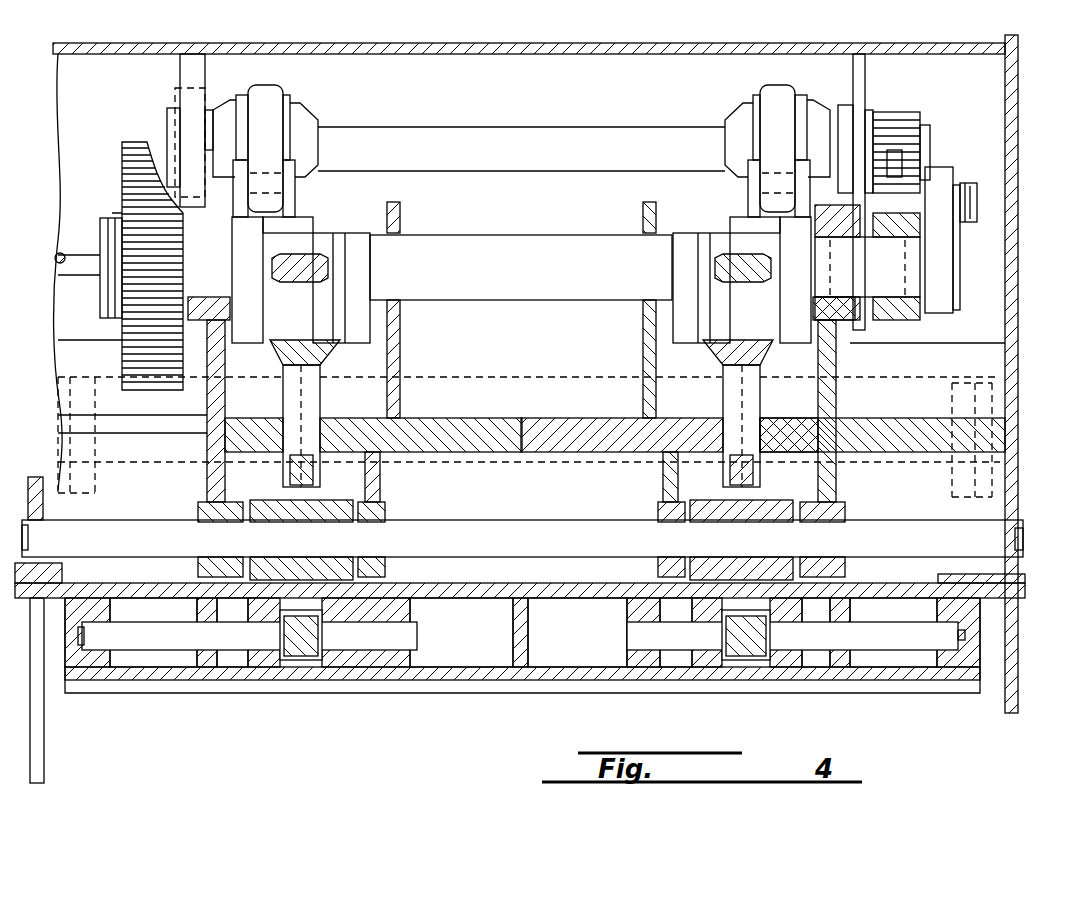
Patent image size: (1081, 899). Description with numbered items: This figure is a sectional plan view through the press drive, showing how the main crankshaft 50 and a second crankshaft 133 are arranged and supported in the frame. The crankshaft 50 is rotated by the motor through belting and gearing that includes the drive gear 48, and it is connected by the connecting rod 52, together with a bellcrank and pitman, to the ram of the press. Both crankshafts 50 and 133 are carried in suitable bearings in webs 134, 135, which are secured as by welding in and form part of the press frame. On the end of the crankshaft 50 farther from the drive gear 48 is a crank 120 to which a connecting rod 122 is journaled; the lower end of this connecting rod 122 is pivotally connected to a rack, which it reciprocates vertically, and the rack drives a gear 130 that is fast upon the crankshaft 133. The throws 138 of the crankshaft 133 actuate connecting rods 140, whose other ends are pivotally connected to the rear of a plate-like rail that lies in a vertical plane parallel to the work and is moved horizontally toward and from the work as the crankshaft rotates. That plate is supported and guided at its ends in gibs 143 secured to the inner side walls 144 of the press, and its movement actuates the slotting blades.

The drive gear 48 is at (138, 172).
The crankshaft 50 is at (520, 268).
The connecting rod 52 is at (305, 398).
The crank 120 is at (988, 285).
The connecting rod 122 is at (947, 247).
The gear 130 is at (893, 112).
The crankshaft 133 is at (507, 135).
The web 134 is at (205, 77).
The web 135 is at (865, 73).
The throw 138 is at (300, 117).
The connecting rod 140 is at (262, 143).
The gib 143 is at (970, 478).
The inner side wall 144 is at (1058, 343).